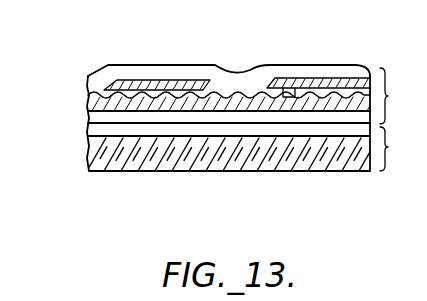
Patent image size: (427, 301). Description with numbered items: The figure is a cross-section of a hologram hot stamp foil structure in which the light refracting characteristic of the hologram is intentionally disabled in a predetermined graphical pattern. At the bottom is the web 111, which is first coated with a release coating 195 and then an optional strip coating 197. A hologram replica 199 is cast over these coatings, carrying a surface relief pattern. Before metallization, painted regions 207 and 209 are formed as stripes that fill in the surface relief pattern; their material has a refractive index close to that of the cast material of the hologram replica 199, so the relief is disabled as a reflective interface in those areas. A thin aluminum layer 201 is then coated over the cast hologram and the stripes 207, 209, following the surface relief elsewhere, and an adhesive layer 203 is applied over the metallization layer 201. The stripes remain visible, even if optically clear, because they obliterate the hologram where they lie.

The web 111 is at (93, 148).
The release coating 195 is at (88, 138).
The strip coating 197 is at (88, 118).
The hologram replica 199 is at (88, 100).
The aluminum layer 201 is at (88, 84).
The adhesive layer 203 is at (310, 64).
The painted region 207 is at (172, 90).
The painted region 209 is at (290, 92).